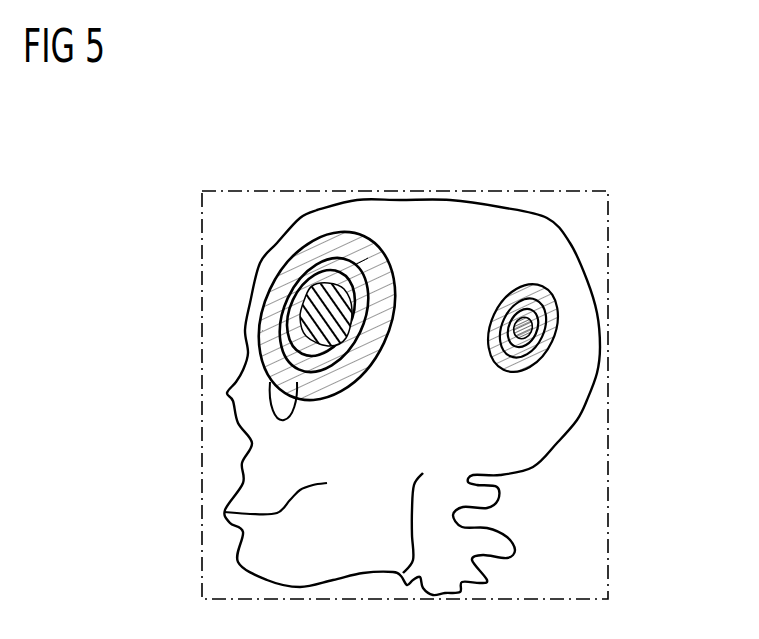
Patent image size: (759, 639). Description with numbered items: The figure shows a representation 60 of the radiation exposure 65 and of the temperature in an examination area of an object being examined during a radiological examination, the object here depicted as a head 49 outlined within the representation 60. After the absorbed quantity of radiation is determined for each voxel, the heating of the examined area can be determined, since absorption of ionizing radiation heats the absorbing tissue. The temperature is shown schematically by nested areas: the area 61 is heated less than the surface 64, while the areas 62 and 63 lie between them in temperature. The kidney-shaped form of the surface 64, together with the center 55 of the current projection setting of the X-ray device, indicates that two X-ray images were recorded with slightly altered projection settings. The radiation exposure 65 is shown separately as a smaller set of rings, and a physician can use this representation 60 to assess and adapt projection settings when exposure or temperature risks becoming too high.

The representation 60 is at (590, 158).
The patient head 49 is at (487, 253).
The area 61 is at (278, 262).
The area 62 is at (300, 277).
The area 63 is at (318, 284).
The surface 64 is at (338, 281).
The center 55 is at (355, 265).
The radiation exposure 65 is at (557, 307).